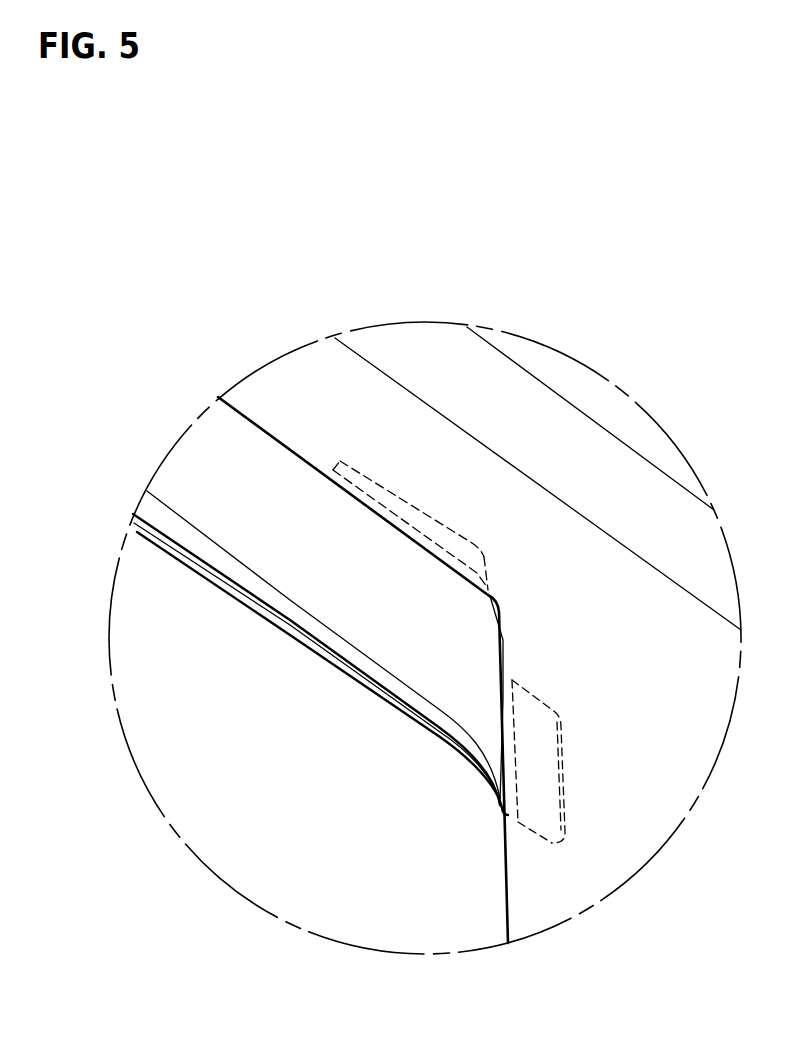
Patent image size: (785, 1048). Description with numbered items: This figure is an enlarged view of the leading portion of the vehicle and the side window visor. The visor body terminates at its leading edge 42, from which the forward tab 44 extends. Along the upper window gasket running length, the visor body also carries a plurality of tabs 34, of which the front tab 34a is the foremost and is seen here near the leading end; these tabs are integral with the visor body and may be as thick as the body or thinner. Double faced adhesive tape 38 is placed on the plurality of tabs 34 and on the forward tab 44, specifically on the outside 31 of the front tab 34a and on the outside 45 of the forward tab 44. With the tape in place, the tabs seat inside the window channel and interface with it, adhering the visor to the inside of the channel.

The outside of tab 31 is at (333, 467).
The plurality of tabs 34 is at (425, 500).
The front tab 34a is at (484, 566).
The double faced adhesive tape 38 is at (360, 472).
The leading edge 42 is at (485, 705).
The forward tab 44 is at (574, 716).
The outside of forward tab 45 is at (507, 630).